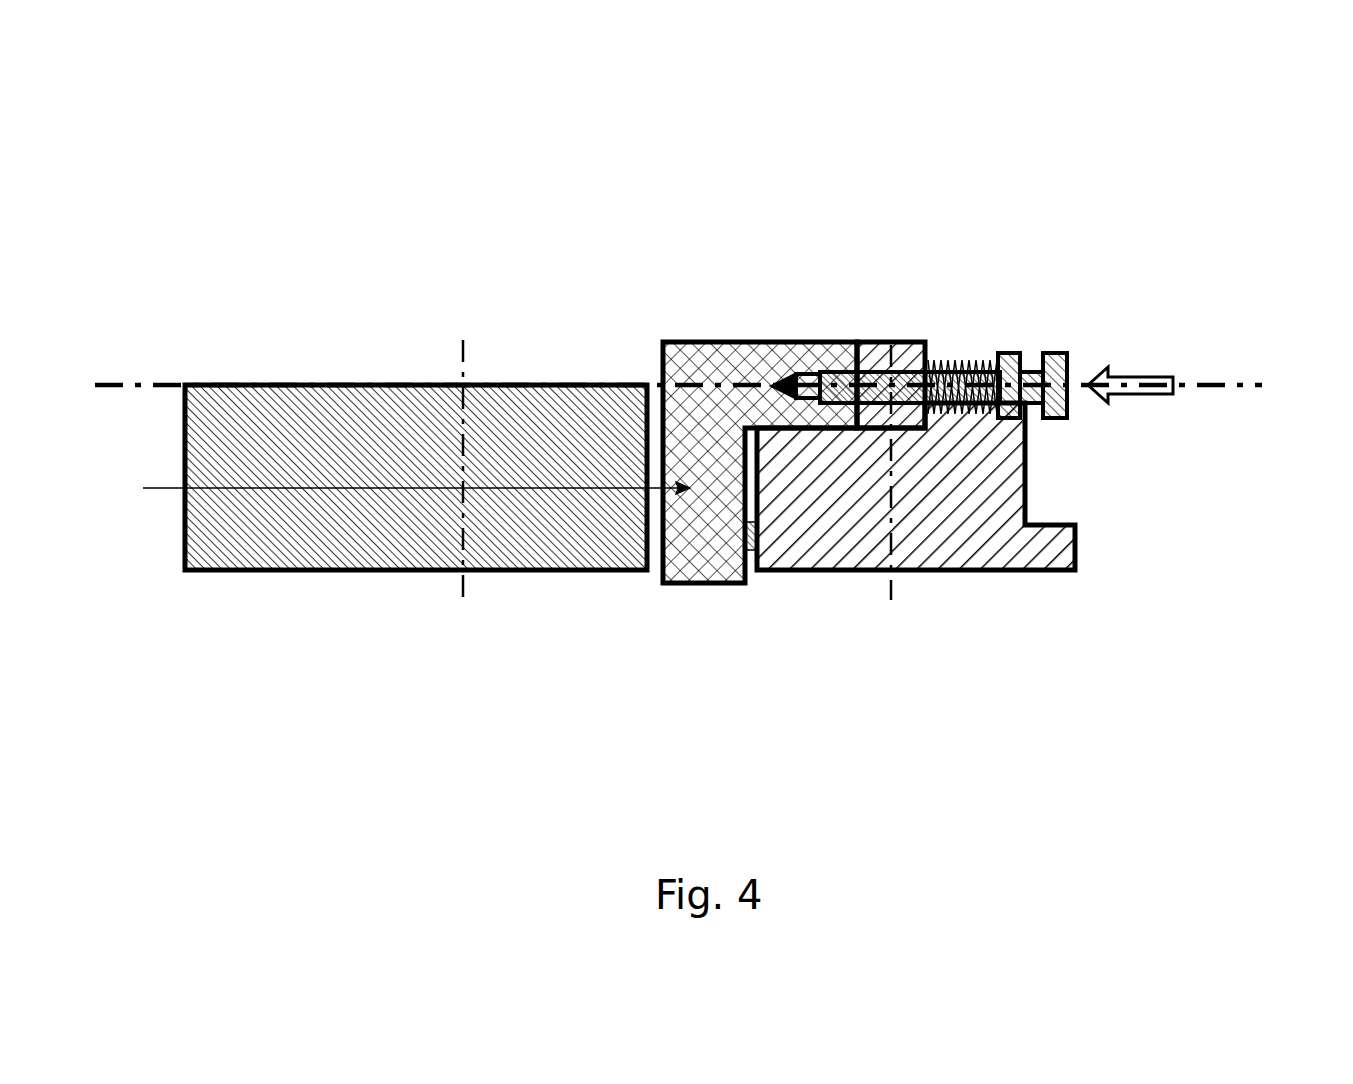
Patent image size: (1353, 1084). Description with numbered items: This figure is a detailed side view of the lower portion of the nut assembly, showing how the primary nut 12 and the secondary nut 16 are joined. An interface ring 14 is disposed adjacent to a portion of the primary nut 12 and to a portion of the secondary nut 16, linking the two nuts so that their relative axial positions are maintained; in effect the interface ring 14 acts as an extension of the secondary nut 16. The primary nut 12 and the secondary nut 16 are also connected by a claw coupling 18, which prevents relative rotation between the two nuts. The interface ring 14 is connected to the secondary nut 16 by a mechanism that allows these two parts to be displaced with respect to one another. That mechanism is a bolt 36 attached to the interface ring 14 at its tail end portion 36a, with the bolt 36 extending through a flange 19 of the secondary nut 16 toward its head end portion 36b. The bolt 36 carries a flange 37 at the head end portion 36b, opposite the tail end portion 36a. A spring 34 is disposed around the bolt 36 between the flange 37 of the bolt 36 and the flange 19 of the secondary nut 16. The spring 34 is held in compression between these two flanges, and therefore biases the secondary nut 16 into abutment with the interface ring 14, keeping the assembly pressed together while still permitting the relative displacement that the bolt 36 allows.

The primary nut 12 is at (282, 520).
The interface ring 14 is at (690, 553).
The secondary nut 16 is at (983, 532).
The claw coupling 18 is at (749, 553).
The flange of the secondary nut 19 is at (882, 344).
The spring 34 is at (984, 400).
The bolt 36 is at (1006, 395).
The tail end portion 36a is at (812, 372).
The head end portion 36b is at (1068, 357).
The flange of the bolt 37 is at (1046, 352).